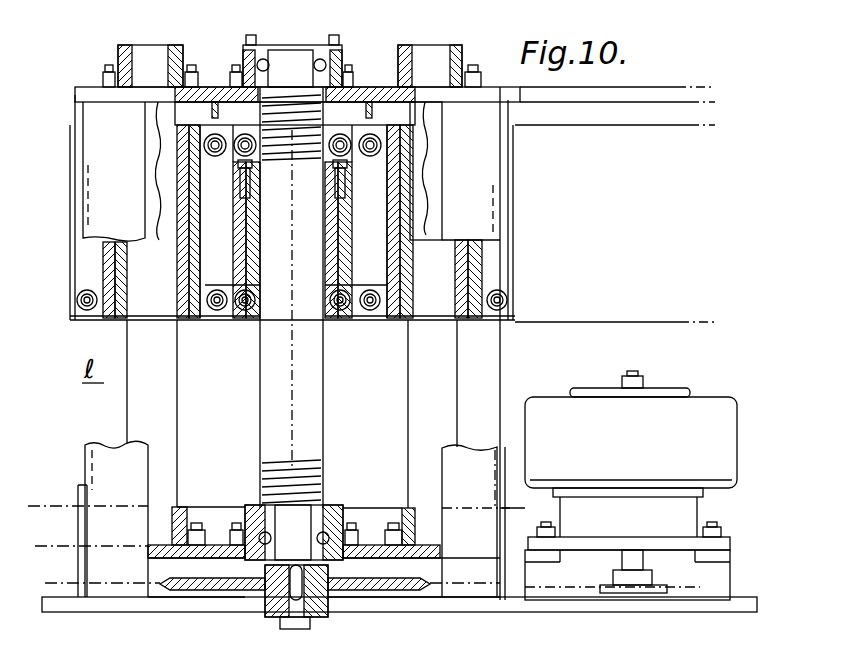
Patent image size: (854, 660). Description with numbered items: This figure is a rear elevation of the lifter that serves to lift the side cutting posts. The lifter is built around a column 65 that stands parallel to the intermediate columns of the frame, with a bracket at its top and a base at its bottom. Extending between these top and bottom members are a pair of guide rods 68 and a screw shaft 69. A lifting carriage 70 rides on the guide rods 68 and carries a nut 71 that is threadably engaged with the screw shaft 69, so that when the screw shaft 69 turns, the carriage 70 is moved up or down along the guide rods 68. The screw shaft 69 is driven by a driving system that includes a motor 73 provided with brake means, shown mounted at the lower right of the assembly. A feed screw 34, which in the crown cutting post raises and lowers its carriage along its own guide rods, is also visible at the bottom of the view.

The column 65 is at (132, 210).
The nut 71 is at (262, 243).
The screw shaft 69 is at (303, 417).
The guide rods 68 is at (158, 388).
The lifting carriage 70 is at (475, 322).
The motor 73 is at (650, 448).
The feed screw 34 is at (462, 590).